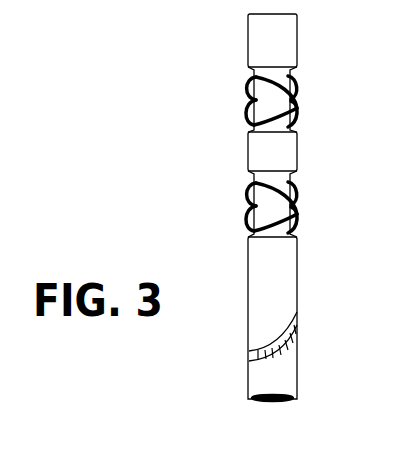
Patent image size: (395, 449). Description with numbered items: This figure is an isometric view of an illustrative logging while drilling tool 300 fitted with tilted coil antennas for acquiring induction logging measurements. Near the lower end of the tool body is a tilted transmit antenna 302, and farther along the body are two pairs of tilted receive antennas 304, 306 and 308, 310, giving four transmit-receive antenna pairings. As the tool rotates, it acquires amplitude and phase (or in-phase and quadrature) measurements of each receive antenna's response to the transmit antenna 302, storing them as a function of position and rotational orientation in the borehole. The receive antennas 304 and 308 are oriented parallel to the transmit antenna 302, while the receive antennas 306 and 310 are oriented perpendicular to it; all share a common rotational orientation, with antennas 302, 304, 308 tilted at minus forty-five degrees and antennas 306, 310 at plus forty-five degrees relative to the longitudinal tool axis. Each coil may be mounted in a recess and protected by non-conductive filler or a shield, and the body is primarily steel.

The logging while drilling tool 300 is at (250, 396).
The tilted transmit antenna 302 is at (250, 352).
The tilted receive antenna 304 is at (248, 217).
The tilted receive antenna 306 is at (249, 190).
The tilted receive antenna 308 is at (249, 113).
The tilted receive antenna 310 is at (249, 88).